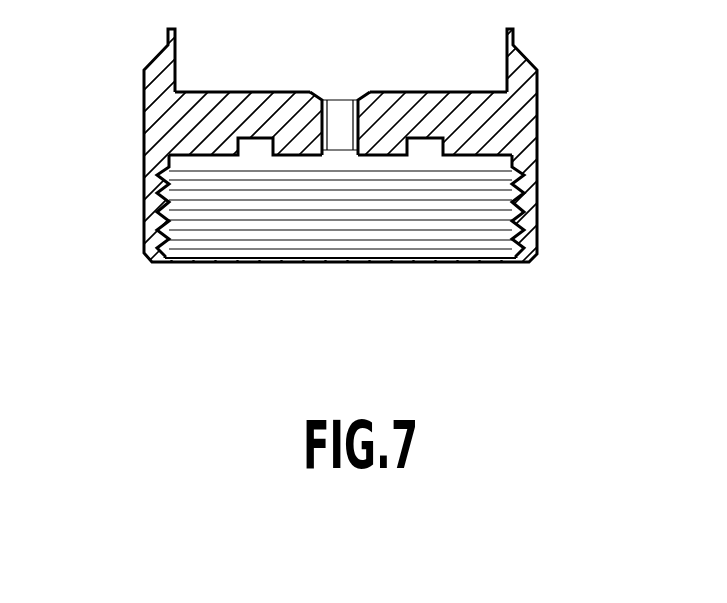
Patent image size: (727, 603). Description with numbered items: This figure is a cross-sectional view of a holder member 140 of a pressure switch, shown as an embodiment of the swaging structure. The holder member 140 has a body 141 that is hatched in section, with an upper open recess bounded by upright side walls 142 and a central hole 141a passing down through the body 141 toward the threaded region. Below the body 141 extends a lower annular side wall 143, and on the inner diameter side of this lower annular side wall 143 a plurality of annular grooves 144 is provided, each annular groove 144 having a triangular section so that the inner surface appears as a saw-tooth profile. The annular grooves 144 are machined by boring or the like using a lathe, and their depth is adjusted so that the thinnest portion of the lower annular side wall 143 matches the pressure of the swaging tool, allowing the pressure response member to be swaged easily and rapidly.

The holder member 140 is at (363, 165).
The cap body 141 is at (228, 117).
The hole 141a is at (342, 132).
The upper side wall 142 is at (160, 77).
The lower annular side wall 143 is at (145, 247).
The annular grooves 144 is at (168, 232).